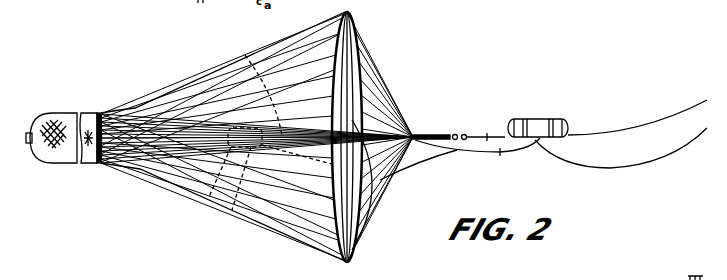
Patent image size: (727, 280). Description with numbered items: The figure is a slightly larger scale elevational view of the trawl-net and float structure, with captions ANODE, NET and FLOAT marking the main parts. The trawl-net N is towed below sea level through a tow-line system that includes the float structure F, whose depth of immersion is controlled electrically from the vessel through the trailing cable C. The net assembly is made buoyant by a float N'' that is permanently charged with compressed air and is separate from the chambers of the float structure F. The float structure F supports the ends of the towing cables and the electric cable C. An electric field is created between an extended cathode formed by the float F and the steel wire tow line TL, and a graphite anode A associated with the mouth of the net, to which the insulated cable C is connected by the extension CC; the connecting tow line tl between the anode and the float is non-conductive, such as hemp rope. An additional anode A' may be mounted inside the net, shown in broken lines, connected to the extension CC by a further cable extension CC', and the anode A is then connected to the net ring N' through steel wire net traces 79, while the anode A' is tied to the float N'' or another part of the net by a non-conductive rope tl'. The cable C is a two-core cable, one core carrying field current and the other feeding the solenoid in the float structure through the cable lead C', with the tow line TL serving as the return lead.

The anode ANODE is at (206, 208).
The trawl-net N is at (257, 137).
The net ring N' is at (360, 133).
The steel wire net traces 79 is at (357, 103).
The float N'' is at (390, 137).
The graphite anode A is at (459, 105).
The connecting tow line tl is at (470, 114).
The graphite anode (additional) A' is at (271, 177).
The non-conductive rope tl' is at (253, 88).
The net NET is at (261, 238).
The float FLOAT is at (545, 118).
The cable lead C' is at (523, 106).
The float structure F is at (548, 120).
The cable extension CC is at (477, 161).
The further cable extension CC' is at (418, 174).
The tow line TL is at (625, 128).
The trailing cable C is at (621, 157).